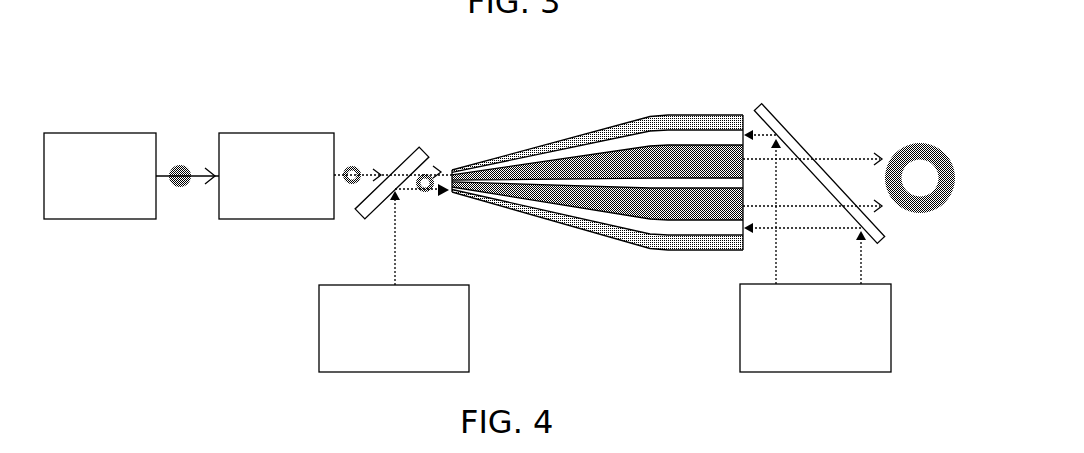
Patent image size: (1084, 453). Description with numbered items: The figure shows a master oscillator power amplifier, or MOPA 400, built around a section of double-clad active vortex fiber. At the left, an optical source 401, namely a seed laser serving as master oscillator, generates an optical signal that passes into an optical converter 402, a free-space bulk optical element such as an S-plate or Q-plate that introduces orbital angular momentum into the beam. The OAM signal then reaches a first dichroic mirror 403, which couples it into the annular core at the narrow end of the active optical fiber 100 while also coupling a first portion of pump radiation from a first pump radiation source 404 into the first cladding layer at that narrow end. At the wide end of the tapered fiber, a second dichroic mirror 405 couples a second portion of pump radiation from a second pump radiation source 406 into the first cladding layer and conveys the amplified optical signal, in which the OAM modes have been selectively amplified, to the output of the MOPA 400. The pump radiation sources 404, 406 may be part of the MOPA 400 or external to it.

The master oscillator power amplifier 400 is at (186, 60).
The optical source 401 is at (101, 132).
The optical converter 402 is at (279, 132).
The first dichroic mirror 403 is at (401, 162).
The first pump radiation source 404 is at (319, 329).
The active optical fiber 100 is at (570, 139).
The second dichroic mirror 405 is at (800, 140).
The second pump radiation source 406 is at (740, 328).